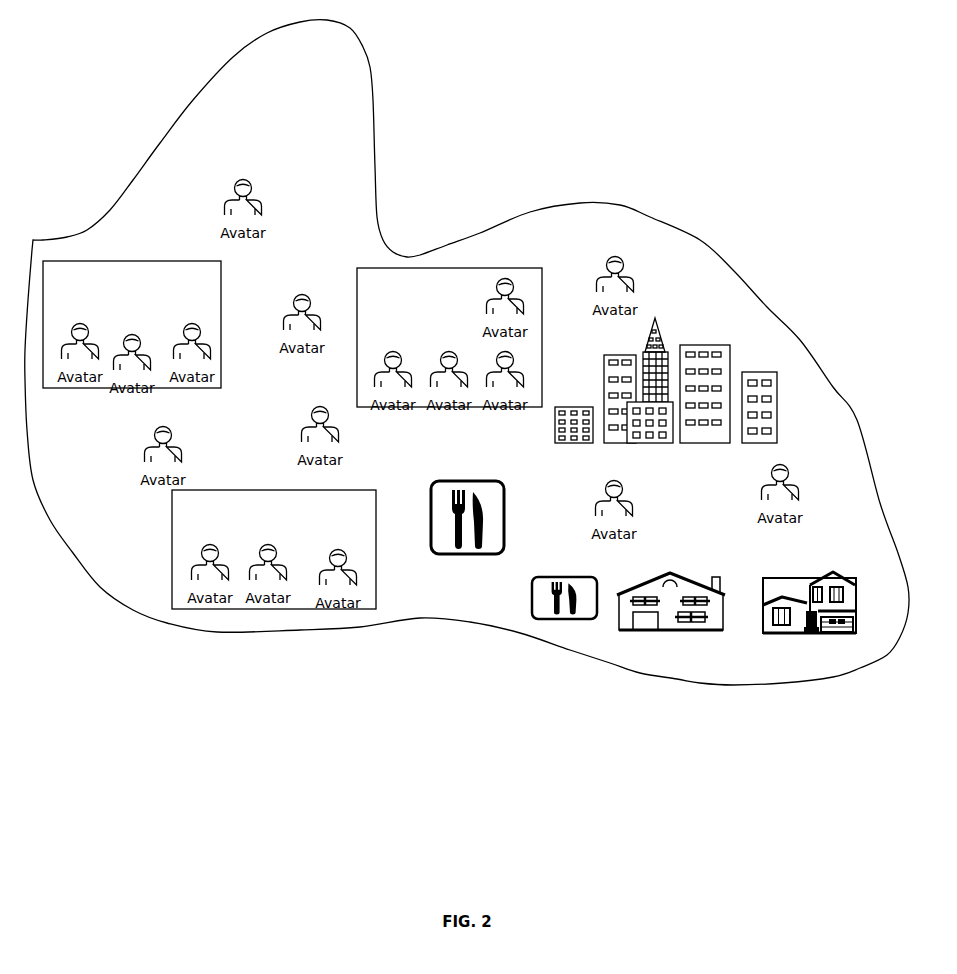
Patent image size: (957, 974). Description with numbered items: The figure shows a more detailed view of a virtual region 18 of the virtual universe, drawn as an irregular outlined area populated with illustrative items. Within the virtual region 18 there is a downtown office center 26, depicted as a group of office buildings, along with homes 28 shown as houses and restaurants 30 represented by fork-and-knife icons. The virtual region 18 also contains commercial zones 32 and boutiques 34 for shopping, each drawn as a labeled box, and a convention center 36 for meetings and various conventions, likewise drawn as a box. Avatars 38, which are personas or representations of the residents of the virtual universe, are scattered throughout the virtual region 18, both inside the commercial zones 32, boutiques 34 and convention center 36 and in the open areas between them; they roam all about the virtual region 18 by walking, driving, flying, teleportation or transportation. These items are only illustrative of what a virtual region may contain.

The virtual region 18 is at (373, 72).
The buildings / city area 26 is at (725, 340).
The houses / residential area 28 is at (678, 630).
The restaurants 30 is at (504, 518).
The commercial zones 32 is at (132, 261).
The boutiques 34 is at (172, 549).
The convention center 36 is at (433, 407).
The avatar 38 is at (262, 195).